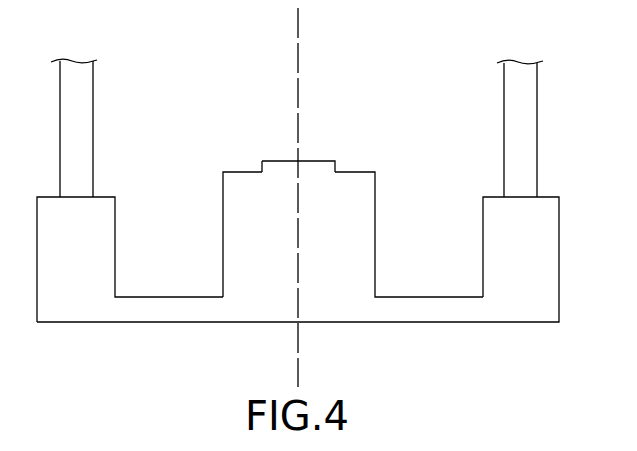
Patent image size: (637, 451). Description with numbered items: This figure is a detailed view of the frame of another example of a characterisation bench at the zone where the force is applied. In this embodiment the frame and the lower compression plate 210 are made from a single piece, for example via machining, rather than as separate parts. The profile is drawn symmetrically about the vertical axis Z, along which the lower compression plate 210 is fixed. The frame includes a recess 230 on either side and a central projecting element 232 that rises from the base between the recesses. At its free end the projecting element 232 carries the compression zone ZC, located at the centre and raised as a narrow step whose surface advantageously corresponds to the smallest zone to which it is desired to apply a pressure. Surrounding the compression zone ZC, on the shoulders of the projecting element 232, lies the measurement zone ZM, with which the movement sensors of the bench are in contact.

The lower compression plate 210 is at (406, 159).
The recess 230 is at (115, 233).
The projecting element 232 is at (365, 247).
The vertical direction Z is at (298, 50).
The measurement zone ZM is at (245, 172).
The compression zone ZC is at (306, 161).